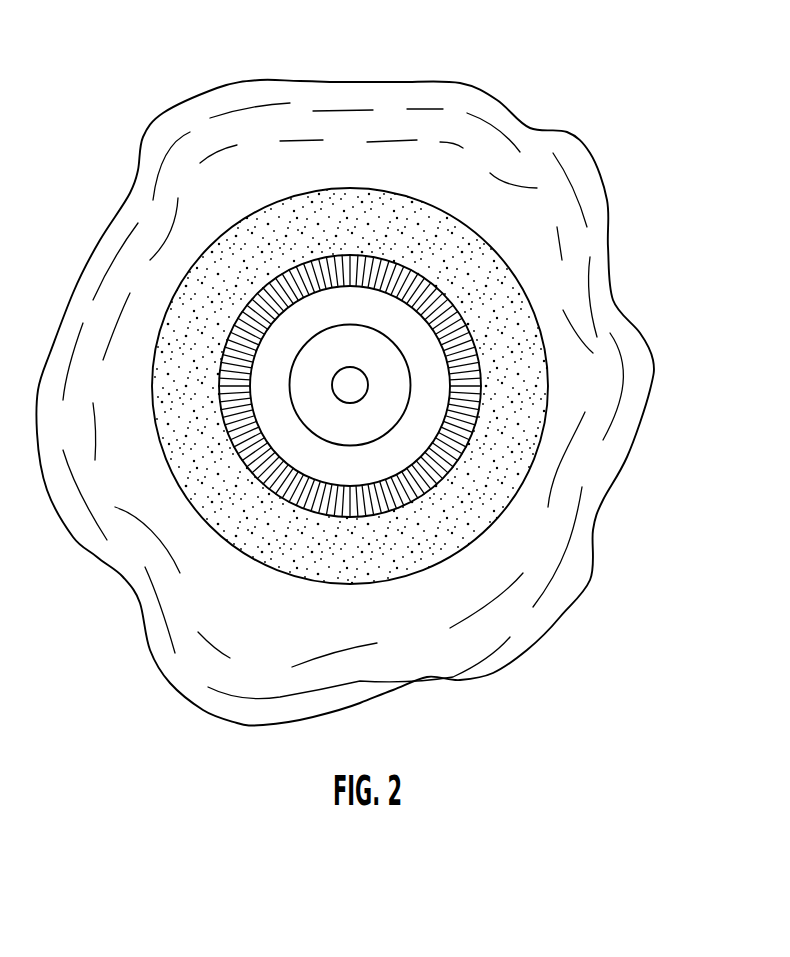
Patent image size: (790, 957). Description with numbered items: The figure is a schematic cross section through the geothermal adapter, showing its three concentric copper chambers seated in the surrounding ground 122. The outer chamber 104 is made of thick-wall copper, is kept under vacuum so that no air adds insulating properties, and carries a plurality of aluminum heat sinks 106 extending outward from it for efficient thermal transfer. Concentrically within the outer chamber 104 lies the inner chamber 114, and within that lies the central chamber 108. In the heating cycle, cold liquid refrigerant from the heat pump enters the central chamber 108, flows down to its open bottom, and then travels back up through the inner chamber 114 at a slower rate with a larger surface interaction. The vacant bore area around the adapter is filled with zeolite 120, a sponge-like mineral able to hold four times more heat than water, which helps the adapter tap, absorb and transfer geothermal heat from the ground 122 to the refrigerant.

The outer chamber 104 is at (427, 415).
The heat sinks 106 is at (443, 292).
The central chamber 108 is at (368, 385).
The inner chamber 114 is at (342, 340).
The zeolite 120 is at (270, 538).
The ground 122 is at (395, 117).